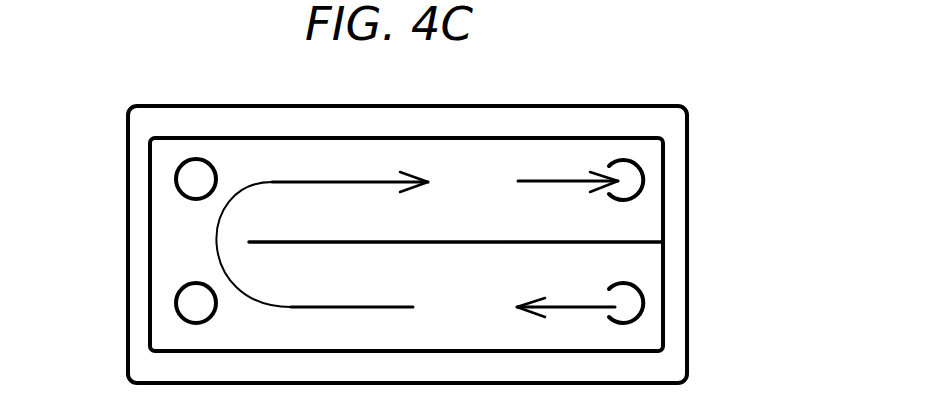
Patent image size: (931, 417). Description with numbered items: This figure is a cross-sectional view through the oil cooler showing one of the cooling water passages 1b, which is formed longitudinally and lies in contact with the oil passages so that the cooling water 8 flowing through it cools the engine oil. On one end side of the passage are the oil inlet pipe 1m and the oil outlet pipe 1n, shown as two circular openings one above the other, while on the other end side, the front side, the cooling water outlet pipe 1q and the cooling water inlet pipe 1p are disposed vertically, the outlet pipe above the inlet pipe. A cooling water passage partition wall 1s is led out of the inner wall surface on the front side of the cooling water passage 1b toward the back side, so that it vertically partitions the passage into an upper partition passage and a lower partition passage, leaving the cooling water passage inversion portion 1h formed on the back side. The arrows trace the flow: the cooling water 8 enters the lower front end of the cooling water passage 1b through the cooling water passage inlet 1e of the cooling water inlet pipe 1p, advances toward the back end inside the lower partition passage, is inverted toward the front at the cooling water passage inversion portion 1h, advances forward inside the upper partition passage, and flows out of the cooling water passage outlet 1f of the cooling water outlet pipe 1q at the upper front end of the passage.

The cooling water passage 1b is at (468, 178).
The cooling water passage inversion portion 1h is at (159, 233).
The oil inlet pipe 1m is at (175, 179).
The oil outlet pipe 1n is at (175, 303).
The cooling water outlet pipe 1q is at (644, 180).
The cooling water inlet pipe 1p is at (644, 303).
The cooling water passage partition wall 1s is at (312, 240).
The cooling water passage outlet 1f is at (610, 190).
The cooling water passage inlet 1e is at (607, 313).
The cooling water 8 is at (533, 183).